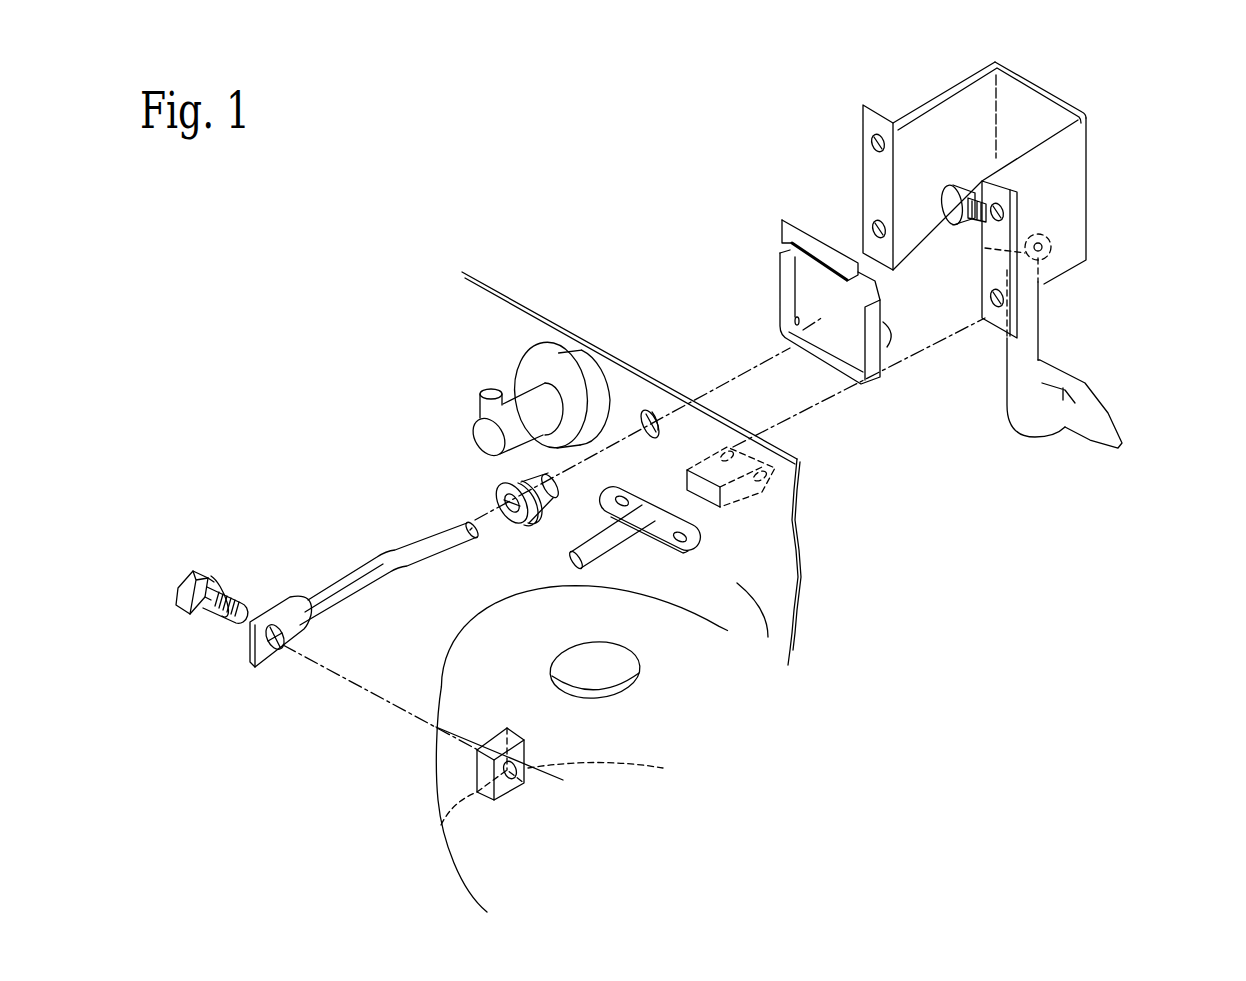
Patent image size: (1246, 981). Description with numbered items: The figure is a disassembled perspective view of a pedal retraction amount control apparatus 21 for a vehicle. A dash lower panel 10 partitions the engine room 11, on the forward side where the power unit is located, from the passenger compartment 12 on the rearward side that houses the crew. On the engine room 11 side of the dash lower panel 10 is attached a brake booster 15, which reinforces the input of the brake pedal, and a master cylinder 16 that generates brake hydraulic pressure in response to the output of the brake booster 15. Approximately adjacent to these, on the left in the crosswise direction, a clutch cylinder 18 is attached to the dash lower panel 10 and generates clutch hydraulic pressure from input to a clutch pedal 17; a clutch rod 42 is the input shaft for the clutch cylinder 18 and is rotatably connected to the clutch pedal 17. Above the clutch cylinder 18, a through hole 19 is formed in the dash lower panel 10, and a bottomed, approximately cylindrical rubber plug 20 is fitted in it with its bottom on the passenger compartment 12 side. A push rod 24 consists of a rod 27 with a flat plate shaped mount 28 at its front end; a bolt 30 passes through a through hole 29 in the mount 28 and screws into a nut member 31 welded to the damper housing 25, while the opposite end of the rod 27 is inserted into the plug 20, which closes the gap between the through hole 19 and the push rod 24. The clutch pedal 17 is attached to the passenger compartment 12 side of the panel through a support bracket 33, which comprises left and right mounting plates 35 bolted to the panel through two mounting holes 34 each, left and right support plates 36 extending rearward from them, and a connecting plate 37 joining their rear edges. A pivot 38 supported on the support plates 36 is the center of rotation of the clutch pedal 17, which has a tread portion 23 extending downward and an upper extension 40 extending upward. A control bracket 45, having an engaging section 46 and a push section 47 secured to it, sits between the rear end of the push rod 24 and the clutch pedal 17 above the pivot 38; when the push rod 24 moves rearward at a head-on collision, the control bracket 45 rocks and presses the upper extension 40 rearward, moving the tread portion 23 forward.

The dash lower panel 10 is at (803, 578).
The engine room 11 is at (768, 637).
The passenger compartment 12 is at (838, 530).
The brake booster 15 is at (533, 368).
The master cylinder 16 is at (483, 433).
The clutch pedal 17 is at (1040, 425).
The clutch cylinder 18 is at (617, 543).
The through hole 19 is at (662, 433).
The rubber plug 20 is at (542, 507).
The pedal retraction amount control apparatus 21 is at (430, 485).
The tread portion 23 is at (1113, 413).
The push rod 24 is at (372, 596).
The damper housing 25 is at (433, 796).
The rod 27 is at (345, 586).
The mount 28 is at (282, 605).
The through hole 29 is at (277, 641).
The bolt 30 is at (180, 612).
The nut member 31 is at (505, 800).
The support bracket 33 is at (1005, 193).
The mounting holes 34 is at (871, 143).
The mounting plates 35 is at (865, 120).
The support plates 36 is at (908, 150).
The connecting plate 37 is at (1077, 108).
The pivot 38 is at (950, 209).
The upper extension 40 is at (958, 183).
The clutch rod 42 is at (690, 500).
The control bracket 45 is at (768, 291).
The engaging section 46 is at (778, 272).
The push section 47 is at (893, 340).